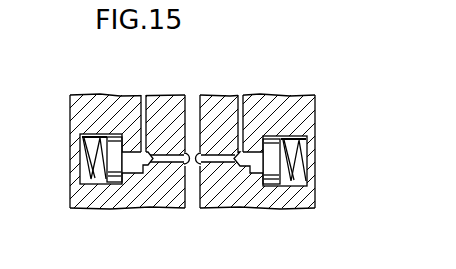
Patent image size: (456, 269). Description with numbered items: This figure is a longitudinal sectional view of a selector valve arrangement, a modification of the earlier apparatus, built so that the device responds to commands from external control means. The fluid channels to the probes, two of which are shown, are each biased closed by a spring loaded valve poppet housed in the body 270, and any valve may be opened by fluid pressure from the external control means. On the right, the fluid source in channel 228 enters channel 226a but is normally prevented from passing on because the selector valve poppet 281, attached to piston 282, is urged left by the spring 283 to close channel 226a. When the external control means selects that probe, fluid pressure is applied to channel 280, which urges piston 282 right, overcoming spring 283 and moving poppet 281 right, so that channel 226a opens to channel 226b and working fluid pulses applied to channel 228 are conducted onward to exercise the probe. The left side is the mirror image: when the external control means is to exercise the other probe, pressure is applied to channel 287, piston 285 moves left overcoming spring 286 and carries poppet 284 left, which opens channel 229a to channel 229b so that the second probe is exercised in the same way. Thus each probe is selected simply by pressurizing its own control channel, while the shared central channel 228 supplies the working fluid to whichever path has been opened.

The valve block 270 is at (97, 209).
The channel 228 is at (195, 209).
The channel 229a is at (162, 182).
The channel 229b is at (143, 94).
The channel 226a is at (216, 163).
The channel 226b is at (240, 94).
The channel 280 is at (266, 137).
The selector valve poppet 281 is at (292, 138).
The piston 282 is at (273, 160).
The spring 283 is at (308, 170).
The poppet 284 is at (108, 154).
The piston 285 is at (112, 155).
The spring 286 is at (96, 138).
The channel 287 is at (120, 134).